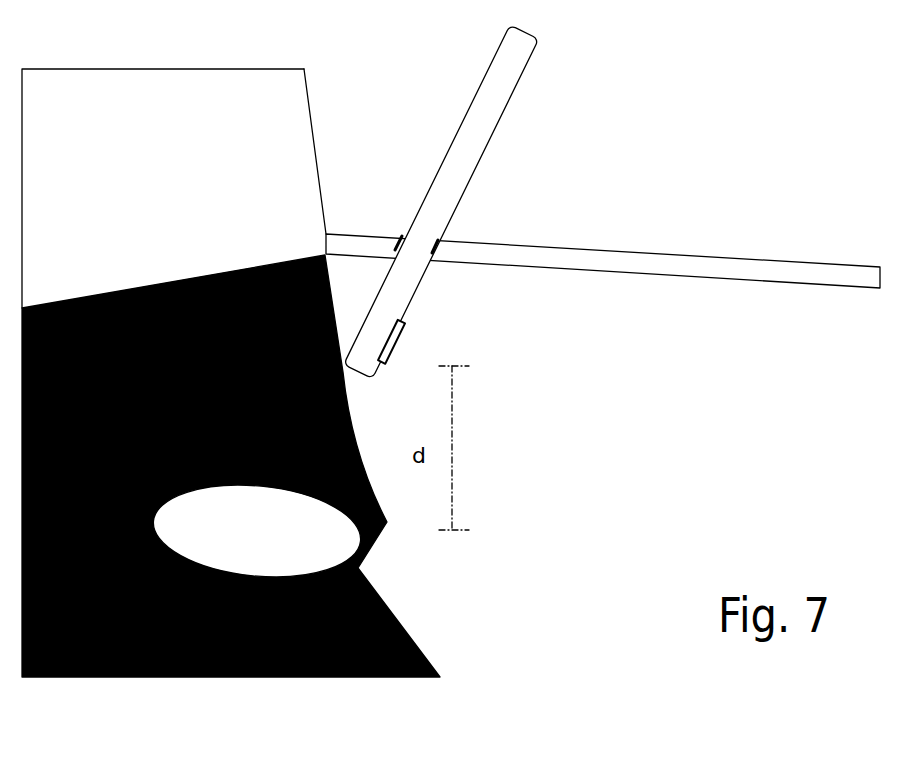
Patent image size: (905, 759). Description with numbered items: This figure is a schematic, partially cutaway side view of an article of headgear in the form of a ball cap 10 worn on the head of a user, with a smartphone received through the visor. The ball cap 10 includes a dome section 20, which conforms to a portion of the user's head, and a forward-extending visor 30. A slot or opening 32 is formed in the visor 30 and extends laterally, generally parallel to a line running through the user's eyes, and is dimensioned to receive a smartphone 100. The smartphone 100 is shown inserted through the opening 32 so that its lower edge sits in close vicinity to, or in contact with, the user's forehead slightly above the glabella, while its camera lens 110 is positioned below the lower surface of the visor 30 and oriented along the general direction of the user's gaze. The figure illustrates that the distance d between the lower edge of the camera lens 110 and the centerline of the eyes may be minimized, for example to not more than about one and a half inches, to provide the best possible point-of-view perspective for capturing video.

The ball cap 10 is at (345, 83).
The dome section 20 is at (314, 152).
The visor 30 is at (585, 247).
The opening 32 is at (390, 241).
The smartphone 100 is at (513, 72).
The camera lens 110 is at (405, 338).